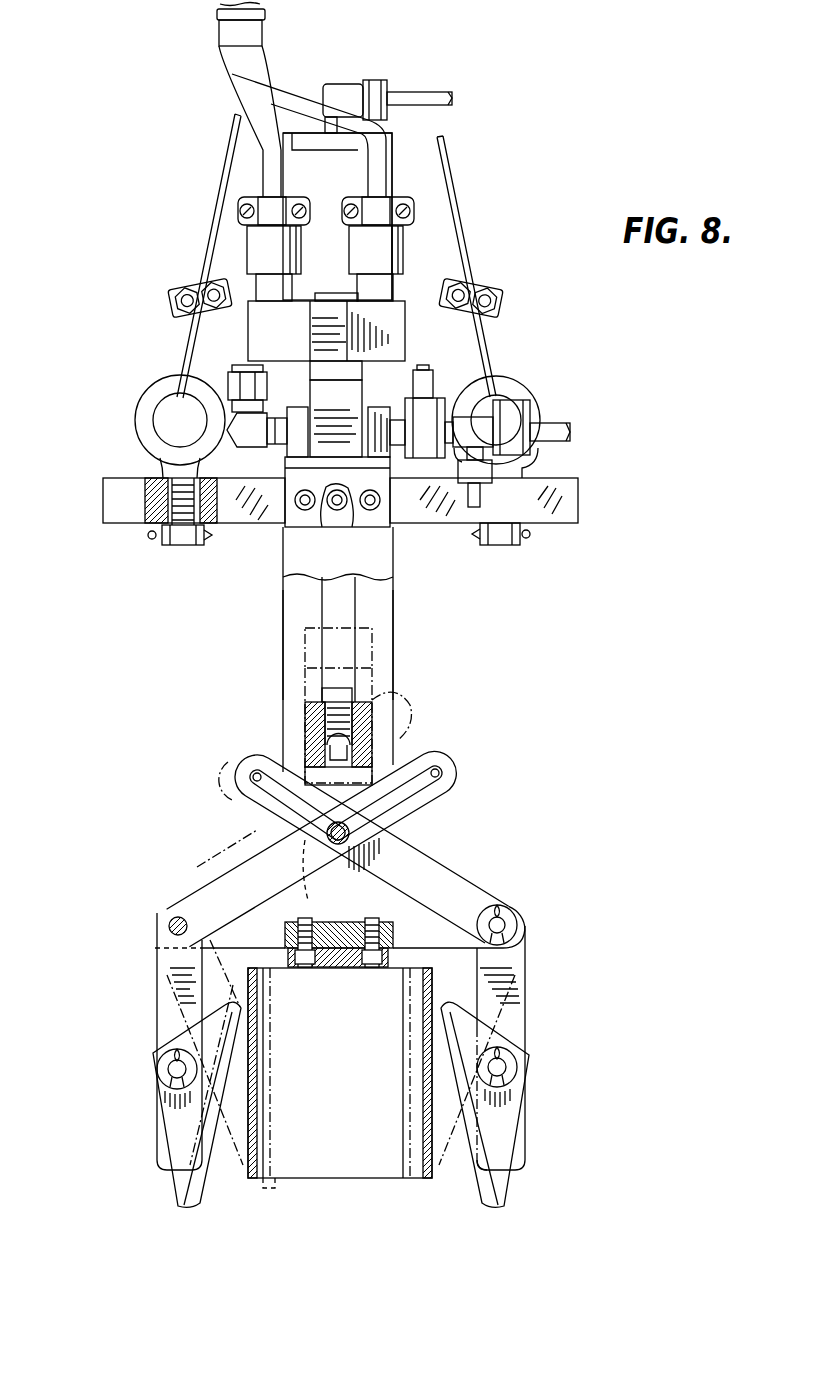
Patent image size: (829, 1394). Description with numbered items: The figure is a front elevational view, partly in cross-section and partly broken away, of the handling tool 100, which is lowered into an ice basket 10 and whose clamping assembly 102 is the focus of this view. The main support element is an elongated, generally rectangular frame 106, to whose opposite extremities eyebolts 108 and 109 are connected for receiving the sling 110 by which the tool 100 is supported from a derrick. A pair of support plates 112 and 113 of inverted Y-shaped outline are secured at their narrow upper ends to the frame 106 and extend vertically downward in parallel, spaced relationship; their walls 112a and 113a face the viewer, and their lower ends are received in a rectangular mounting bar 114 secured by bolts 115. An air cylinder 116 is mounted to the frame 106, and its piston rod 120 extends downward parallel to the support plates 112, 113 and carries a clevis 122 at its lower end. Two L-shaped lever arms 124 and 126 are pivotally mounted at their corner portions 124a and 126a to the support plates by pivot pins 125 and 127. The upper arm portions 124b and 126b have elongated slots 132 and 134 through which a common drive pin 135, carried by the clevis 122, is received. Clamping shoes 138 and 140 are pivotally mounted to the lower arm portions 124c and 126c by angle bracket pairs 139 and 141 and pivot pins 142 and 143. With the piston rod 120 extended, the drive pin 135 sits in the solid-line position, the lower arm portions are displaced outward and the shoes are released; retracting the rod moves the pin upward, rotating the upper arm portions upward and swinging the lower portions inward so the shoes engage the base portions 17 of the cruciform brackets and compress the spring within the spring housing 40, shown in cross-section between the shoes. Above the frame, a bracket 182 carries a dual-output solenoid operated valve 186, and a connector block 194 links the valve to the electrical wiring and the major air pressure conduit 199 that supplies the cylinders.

The ice basket 10 is at (175, 30).
The handling tool 100 is at (551, 184).
The major air pressure conduit 199 is at (253, 57).
The air cylinder 116 is at (342, 184).
The sling 110 is at (208, 257).
The connector block 194 is at (290, 310).
The first solenoid operated valve 186 is at (348, 403).
The bracket 182 is at (293, 485).
The eyebolt 109 is at (155, 392).
The eyebolt 108 is at (530, 398).
The frame 106 is at (580, 493).
The support plate 112 is at (281, 564).
The column right wall 112a is at (393, 564).
The support plate 113 is at (287, 603).
The column right wall 113a is at (393, 607).
The piston rod 120 is at (352, 610).
The clevis 122 is at (305, 706).
The upper arm portion 124b is at (398, 690).
The elongated slot 134 is at (257, 770).
The elongated slot 132 is at (440, 760).
The common drive pin 135 is at (385, 778).
The clamping assembly 102 is at (528, 771).
The upper arm portion 126b is at (220, 769).
The L-shaped arm 124 is at (205, 893).
The L-shaped arm 126 is at (452, 866).
The corner portion 124a is at (152, 932).
The pivot pin 125 is at (167, 938).
The mounting bar 114 is at (393, 930).
The bolts 115 is at (375, 921).
The corner portion 126a is at (510, 917).
The pivot pin 127 is at (508, 930).
The pivot pin 142 is at (168, 1068).
The pivot pin 143 is at (512, 1067).
The lower arm portion 124c is at (155, 1118).
The lower arm portion 126c is at (527, 1124).
The angle bracket pair 139 is at (172, 1124).
The clamping shoe 138 is at (262, 1195).
The angle bracket pair 141 is at (500, 1181).
The clamping shoe 140 is at (477, 1178).
The spring housing 40 is at (352, 1078).
The base portions 17 is at (253, 1128).